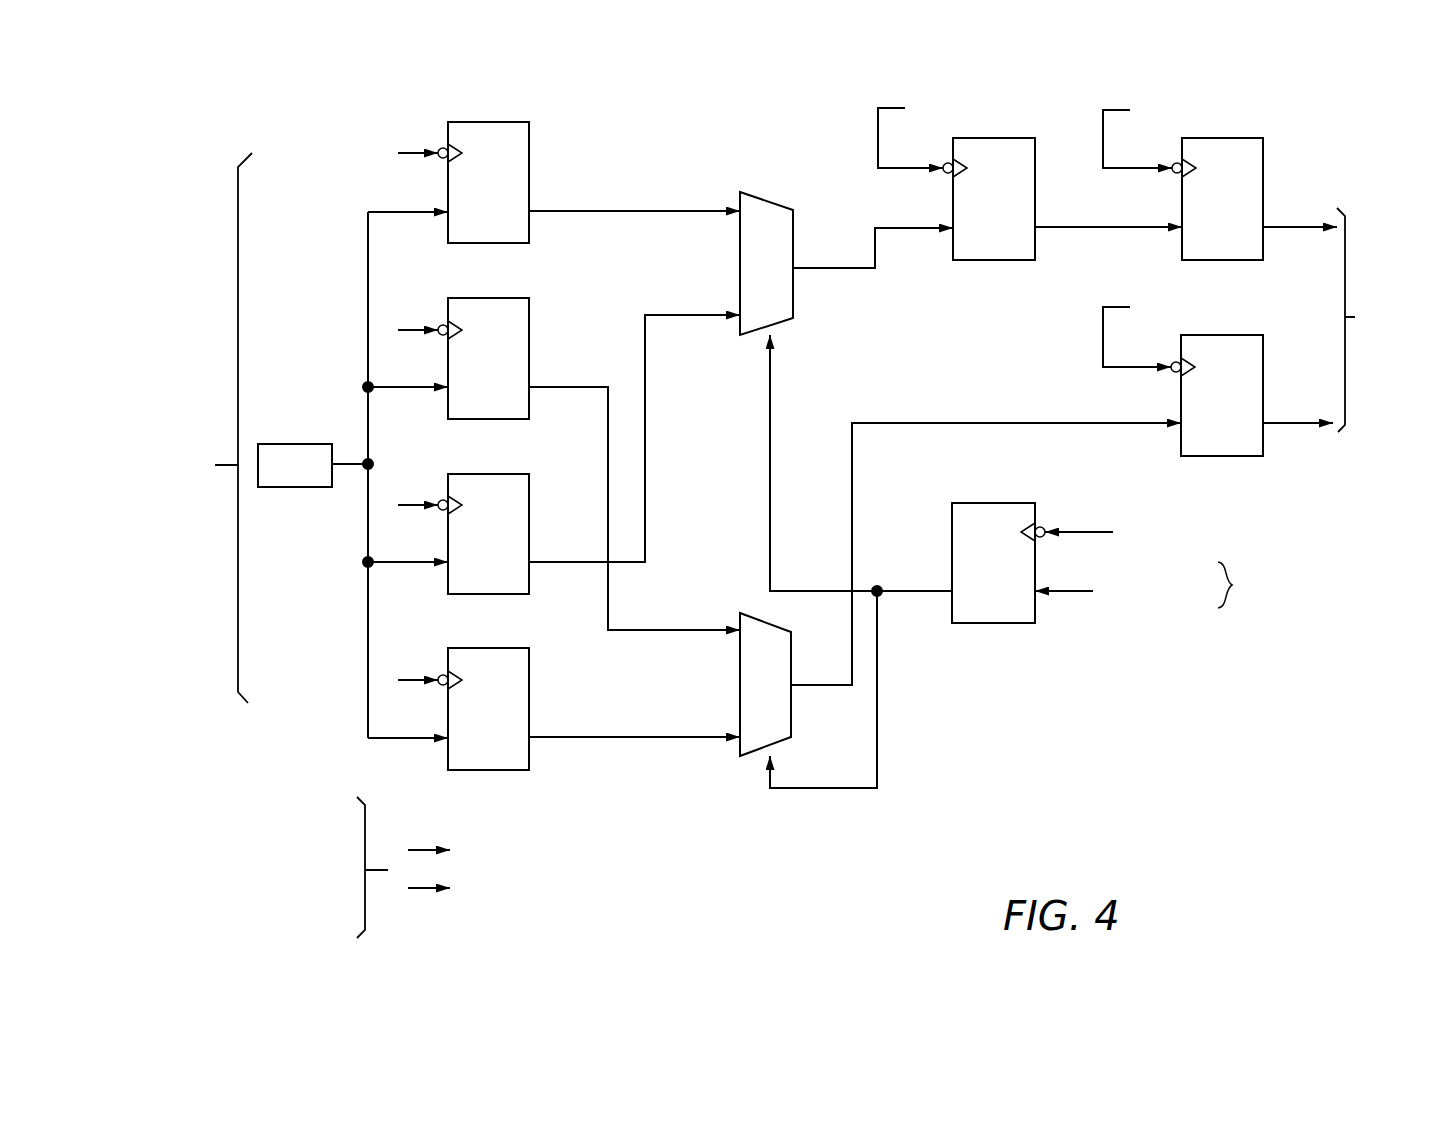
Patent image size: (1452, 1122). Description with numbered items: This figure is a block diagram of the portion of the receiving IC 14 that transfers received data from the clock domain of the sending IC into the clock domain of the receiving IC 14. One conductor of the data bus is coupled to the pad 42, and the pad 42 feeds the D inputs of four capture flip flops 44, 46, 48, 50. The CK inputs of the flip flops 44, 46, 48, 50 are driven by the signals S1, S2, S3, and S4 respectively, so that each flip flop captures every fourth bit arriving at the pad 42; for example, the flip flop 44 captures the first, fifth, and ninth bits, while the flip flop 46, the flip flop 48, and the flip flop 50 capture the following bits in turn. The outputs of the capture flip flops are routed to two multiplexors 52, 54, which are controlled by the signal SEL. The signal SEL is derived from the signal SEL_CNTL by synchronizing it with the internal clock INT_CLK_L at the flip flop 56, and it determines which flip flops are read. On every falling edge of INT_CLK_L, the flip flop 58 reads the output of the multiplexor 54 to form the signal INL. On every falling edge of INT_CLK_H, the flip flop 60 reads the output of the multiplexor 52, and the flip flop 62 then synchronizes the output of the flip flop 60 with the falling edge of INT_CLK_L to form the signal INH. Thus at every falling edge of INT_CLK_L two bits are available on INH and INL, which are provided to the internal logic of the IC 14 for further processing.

The receiving IC 14 is at (1198, 782).
The pad 42 is at (288, 487).
The flip flop 44 is at (529, 128).
The flip flop 46 is at (529, 304).
The flip flop 48 is at (529, 480).
The flip flop 50 is at (529, 654).
The multiplexor 52 is at (793, 220).
The multiplexor 54 is at (784, 740).
The flip flop 56 is at (1035, 509).
The flip flop 58 is at (1263, 341).
The flip flop 60 is at (1035, 144).
The flip flop 62 is at (1263, 144).